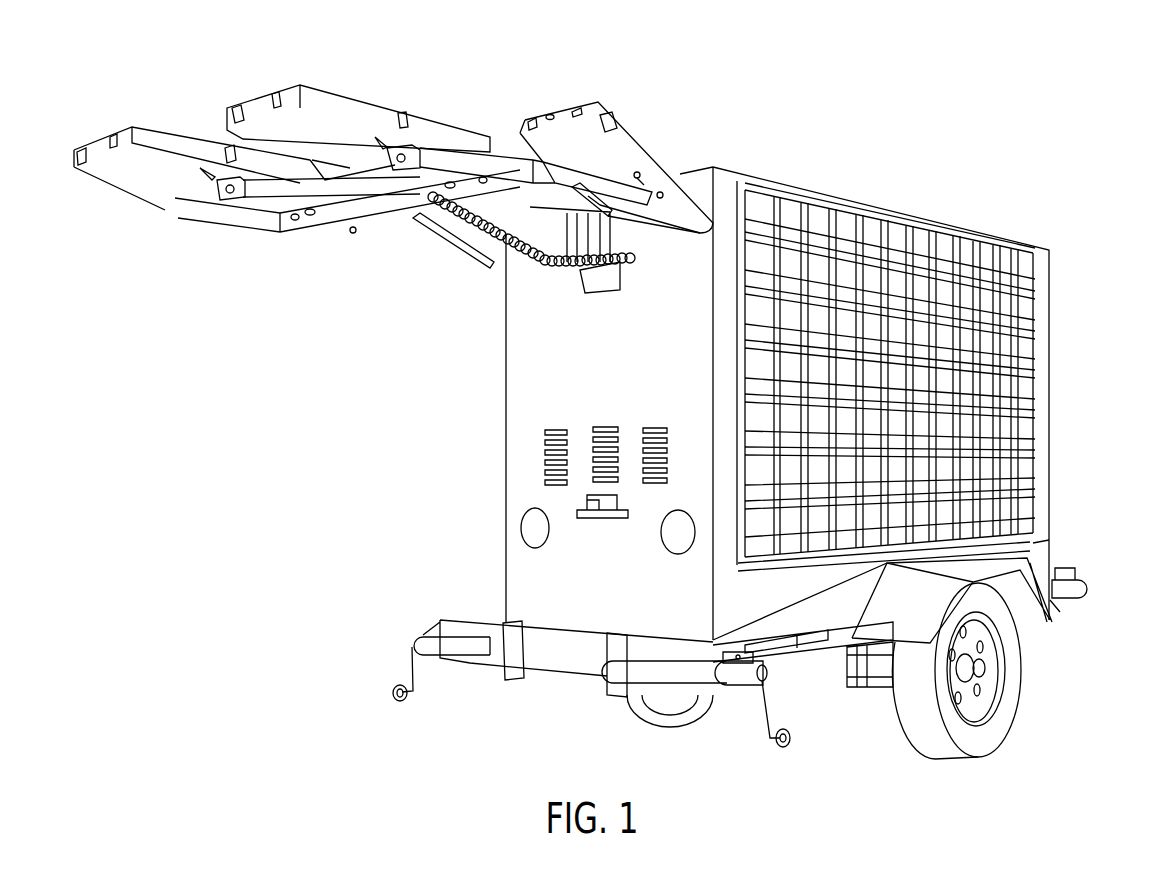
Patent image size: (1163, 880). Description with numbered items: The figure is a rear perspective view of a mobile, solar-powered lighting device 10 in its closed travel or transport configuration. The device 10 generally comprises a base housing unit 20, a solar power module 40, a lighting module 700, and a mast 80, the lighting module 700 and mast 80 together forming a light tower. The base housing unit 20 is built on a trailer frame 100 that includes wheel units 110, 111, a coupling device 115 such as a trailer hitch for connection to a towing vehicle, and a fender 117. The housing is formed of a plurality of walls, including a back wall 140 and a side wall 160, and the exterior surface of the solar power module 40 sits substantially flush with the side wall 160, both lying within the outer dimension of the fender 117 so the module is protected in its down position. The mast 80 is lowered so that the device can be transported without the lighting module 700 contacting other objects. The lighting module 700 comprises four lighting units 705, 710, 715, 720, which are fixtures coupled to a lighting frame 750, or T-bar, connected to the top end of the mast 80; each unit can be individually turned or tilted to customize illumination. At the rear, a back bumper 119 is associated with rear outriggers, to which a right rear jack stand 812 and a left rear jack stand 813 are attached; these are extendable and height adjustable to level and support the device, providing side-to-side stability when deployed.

The mobile, solar-powered lighting device 10 is at (914, 139).
The base housing unit 20 is at (460, 313).
The solar power module 40 is at (1027, 394).
The mast 80 is at (515, 250).
The trailer frame 100 is at (804, 660).
The wheel unit 110 is at (637, 720).
The wheel unit 111 is at (1008, 722).
The coupling device 115 is at (1094, 572).
The fender 117 is at (985, 563).
The back bumper 119 is at (550, 674).
The back wall 140 is at (588, 364).
The side wall 160 is at (778, 601).
The lighting module 700 is at (97, 97).
The lighting unit 705 is at (302, 146).
The lighting unit 710 is at (125, 180).
The lighting unit 715 is at (555, 157).
The lighting unit 720 is at (463, 238).
The lighting frame 750 is at (352, 208).
The right rear jack stand 812 is at (607, 694).
The left rear jack stand 813 is at (420, 653).